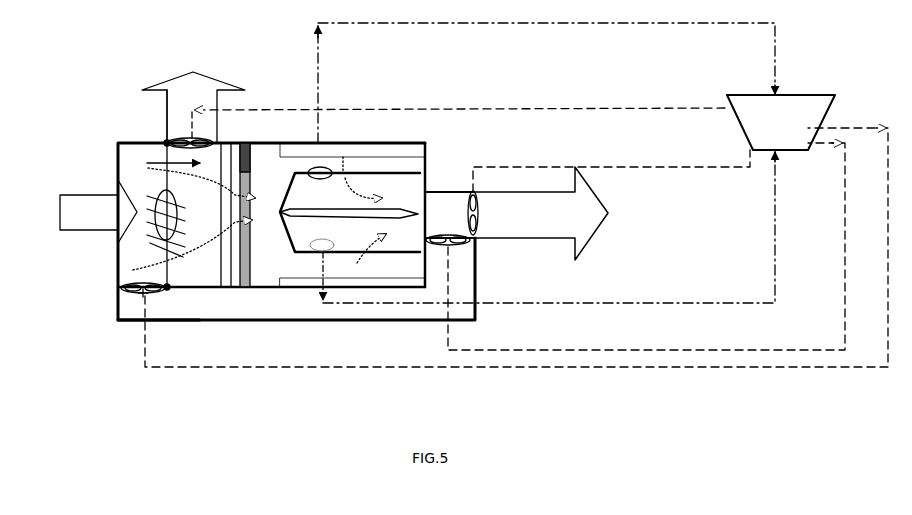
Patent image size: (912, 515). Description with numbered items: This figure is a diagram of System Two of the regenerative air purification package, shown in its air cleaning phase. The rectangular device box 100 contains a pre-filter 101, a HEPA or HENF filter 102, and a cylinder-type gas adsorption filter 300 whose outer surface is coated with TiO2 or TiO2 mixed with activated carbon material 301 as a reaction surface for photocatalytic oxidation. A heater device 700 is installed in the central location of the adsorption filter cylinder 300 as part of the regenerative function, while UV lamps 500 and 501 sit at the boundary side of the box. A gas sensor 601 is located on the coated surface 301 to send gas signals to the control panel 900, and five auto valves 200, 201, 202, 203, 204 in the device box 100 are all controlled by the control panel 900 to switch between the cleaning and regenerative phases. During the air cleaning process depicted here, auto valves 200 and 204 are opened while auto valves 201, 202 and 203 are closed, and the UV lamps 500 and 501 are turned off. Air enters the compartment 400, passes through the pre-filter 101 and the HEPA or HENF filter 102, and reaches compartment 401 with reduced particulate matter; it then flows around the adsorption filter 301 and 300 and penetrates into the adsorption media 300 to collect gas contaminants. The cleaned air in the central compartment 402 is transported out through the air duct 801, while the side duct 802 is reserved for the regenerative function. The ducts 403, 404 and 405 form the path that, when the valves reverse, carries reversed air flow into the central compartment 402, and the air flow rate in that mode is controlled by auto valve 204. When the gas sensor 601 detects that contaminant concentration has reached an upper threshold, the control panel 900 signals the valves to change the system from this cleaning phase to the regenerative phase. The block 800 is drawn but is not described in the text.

The device box 100 is at (115, 256).
The pre-filter 101 is at (155, 320).
The HEPA or HENF filter 102 is at (222, 262).
The auto valve 200 is at (118, 166).
The auto valve 201 is at (118, 292).
The auto valve 202 is at (182, 134).
The auto valve 203 is at (449, 249).
The auto valve 204 is at (482, 213).
The adsorption filter cylinder 300 is at (413, 185).
The TiO2 or TiO2 mixed with activated carbon material 301 is at (397, 174).
The compartment 400 is at (185, 165).
The compartment 401 is at (272, 170).
The compartment 402 is at (446, 205).
The duct 403 is at (135, 248).
The duct 404 is at (247, 312).
The duct 405 is at (473, 190).
The UV lamp 500 is at (330, 258).
The UV lamp 501 is at (325, 142).
The gas sensor 601 is at (316, 164).
The heater device 700 is at (247, 262).
The heat source 800 is at (98, 211).
The air duct 801 is at (540, 213).
The side air duct 802 is at (193, 98).
The control panel 900 is at (781, 122).